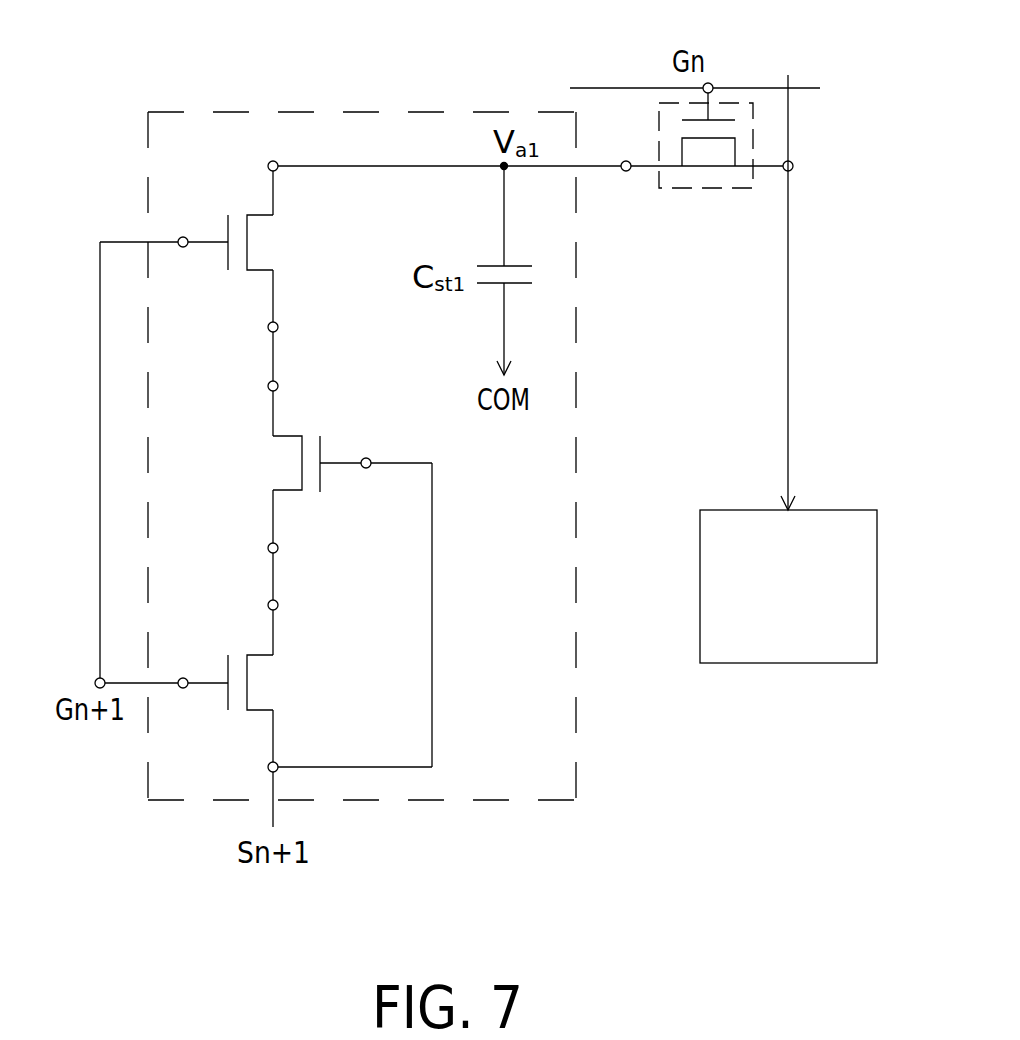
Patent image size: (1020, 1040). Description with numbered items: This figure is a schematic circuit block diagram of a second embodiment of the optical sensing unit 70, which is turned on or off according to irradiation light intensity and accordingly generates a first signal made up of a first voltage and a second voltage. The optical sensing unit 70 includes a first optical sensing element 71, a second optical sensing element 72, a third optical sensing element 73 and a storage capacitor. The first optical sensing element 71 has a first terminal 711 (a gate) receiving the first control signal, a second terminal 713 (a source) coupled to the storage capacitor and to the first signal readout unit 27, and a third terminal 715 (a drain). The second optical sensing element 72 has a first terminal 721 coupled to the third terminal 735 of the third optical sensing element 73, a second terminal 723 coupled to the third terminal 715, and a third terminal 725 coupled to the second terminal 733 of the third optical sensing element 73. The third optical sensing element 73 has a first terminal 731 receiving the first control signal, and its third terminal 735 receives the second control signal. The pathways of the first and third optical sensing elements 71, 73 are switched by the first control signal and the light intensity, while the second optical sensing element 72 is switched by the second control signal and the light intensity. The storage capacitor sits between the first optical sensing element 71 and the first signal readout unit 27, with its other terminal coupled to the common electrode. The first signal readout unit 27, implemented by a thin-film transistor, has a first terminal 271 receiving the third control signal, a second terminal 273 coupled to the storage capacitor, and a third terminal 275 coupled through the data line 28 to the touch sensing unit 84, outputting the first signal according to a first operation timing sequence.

The optical sensing unit 70 is at (431, 110).
The first optical sensing element 71 is at (250, 242).
The first terminal of the first optical sensing element 711 is at (183, 236).
The second terminal of the first optical sensing element 713 is at (273, 160).
The third terminal of the first optical sensing element 715 is at (279, 327).
The second optical sensing element 72 is at (300, 463).
The first terminal of the second optical sensing element 721 is at (366, 458).
The second terminal of the second optical sensing element 723 is at (267, 386).
The third terminal of the second optical sensing element 725 is at (279, 548).
The third optical sensing element 73 is at (249, 683).
The first terminal of the third optical sensing element 731 is at (183, 689).
The second terminal of the third optical sensing element 733 is at (279, 605).
The third terminal of the third optical sensing element 735 is at (268, 767).
The first signal readout unit 27 is at (705, 190).
The first terminal of the first signal readout unit 271 is at (711, 84).
The second terminal of the first signal readout unit 273 is at (626, 160).
The third terminal of the first signal readout unit 275 is at (794, 166).
The data line 28 is at (790, 335).
The touch sensing unit 84 is at (700, 585).